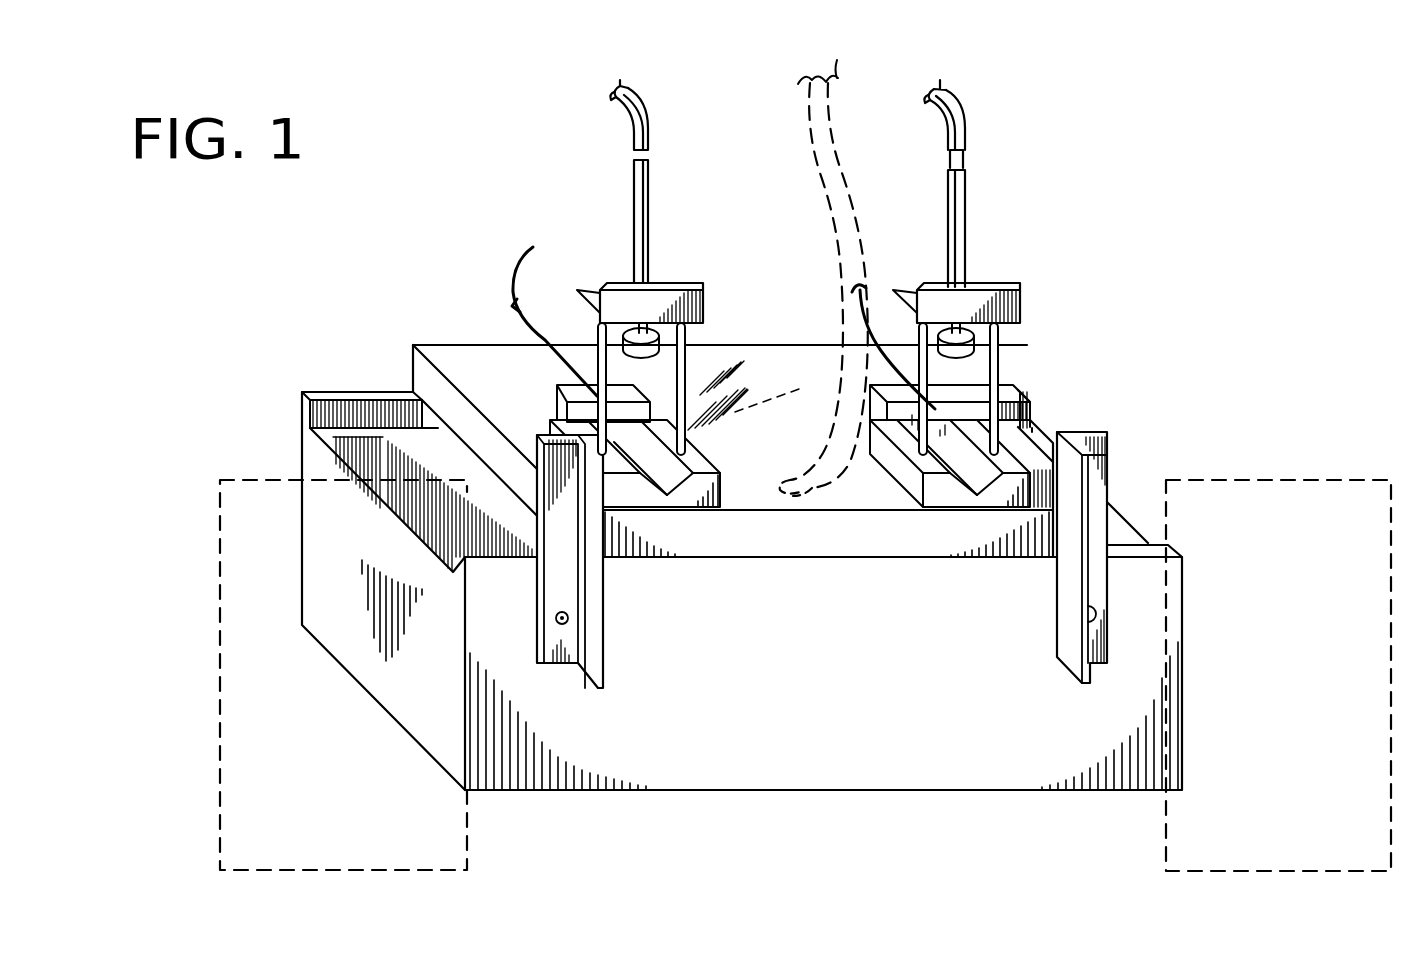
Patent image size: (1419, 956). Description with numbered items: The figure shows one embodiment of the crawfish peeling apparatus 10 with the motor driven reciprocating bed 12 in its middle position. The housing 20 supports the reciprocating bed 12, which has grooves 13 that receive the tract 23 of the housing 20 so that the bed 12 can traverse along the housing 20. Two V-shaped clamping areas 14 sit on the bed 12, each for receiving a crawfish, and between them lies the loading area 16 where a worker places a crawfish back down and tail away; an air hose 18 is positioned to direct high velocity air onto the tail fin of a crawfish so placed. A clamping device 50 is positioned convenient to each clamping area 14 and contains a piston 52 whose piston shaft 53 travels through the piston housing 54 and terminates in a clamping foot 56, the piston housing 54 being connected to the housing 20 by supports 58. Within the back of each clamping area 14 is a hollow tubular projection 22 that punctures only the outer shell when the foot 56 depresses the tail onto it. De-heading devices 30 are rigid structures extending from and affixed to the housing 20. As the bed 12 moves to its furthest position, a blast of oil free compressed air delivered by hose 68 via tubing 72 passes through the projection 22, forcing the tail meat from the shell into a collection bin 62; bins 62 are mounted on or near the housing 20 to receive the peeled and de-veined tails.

The crawfish peeling apparatus 10 is at (318, 288).
The reciprocating bed 12 is at (808, 389).
The grooves 13 is at (412, 389).
The clamping areas 14 is at (657, 468).
The loading area 16 is at (774, 473).
The air hose 18 is at (822, 150).
The housing 20 is at (861, 711).
The hollow tubular projection 22 is at (567, 396).
The tract 23 is at (318, 391).
The de-heading devices 30 is at (604, 623).
The clamping device 50 is at (803, 267).
The piston 52 is at (650, 188).
The piston shaft 53 is at (622, 333).
The piston housing 54 is at (651, 308).
The clamping foot 56 is at (660, 344).
The supports 58 is at (688, 352).
The bins 62 is at (333, 771).
The hose 68 is at (723, 320).
The tubing 72 is at (960, 128).